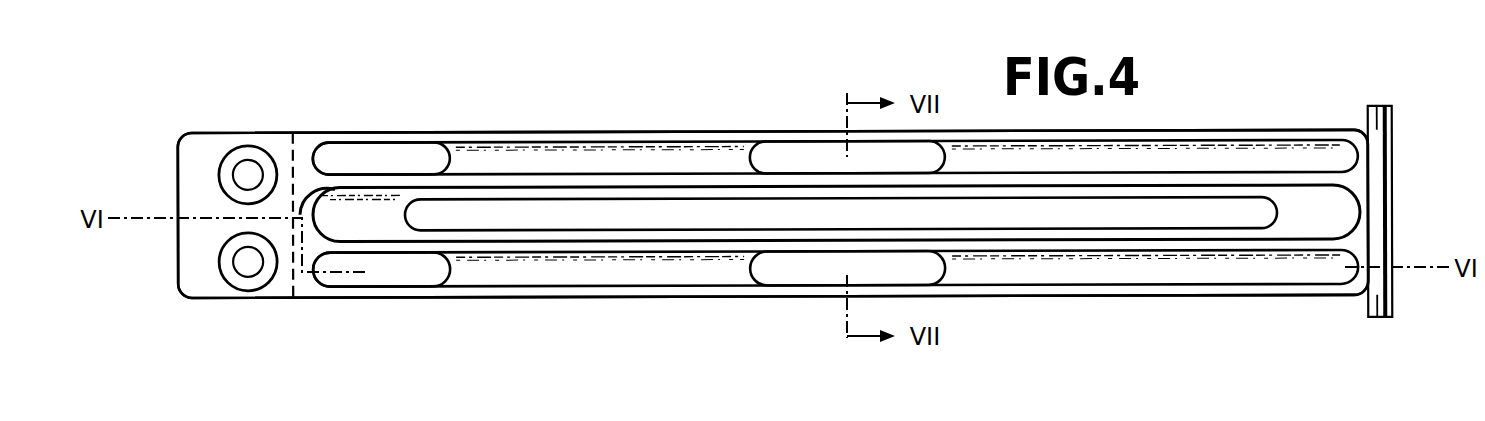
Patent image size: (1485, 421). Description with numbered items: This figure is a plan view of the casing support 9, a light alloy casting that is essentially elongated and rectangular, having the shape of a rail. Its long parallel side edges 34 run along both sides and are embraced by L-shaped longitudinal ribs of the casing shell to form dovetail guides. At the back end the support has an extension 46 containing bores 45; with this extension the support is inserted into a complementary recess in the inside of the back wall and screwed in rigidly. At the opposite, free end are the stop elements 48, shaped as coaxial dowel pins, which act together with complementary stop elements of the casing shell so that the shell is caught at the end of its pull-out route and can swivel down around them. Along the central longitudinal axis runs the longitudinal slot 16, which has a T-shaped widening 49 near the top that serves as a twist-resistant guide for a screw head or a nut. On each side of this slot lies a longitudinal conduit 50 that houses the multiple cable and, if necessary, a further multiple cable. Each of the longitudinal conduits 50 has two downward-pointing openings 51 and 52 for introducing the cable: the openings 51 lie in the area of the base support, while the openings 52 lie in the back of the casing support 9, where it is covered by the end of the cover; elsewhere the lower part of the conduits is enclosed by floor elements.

The casing support 9 is at (1193, 111).
The longitudinal slot 16 is at (683, 222).
The long parallel side edges 34 is at (523, 126).
The bores 45 is at (247, 172).
The extension 46 is at (193, 262).
The stop elements 48 is at (1393, 113).
The T-shaped widening 49 is at (387, 232).
The longitudinal conduits 50 is at (639, 158).
The openings 51 is at (801, 152).
The openings 52 is at (381, 152).